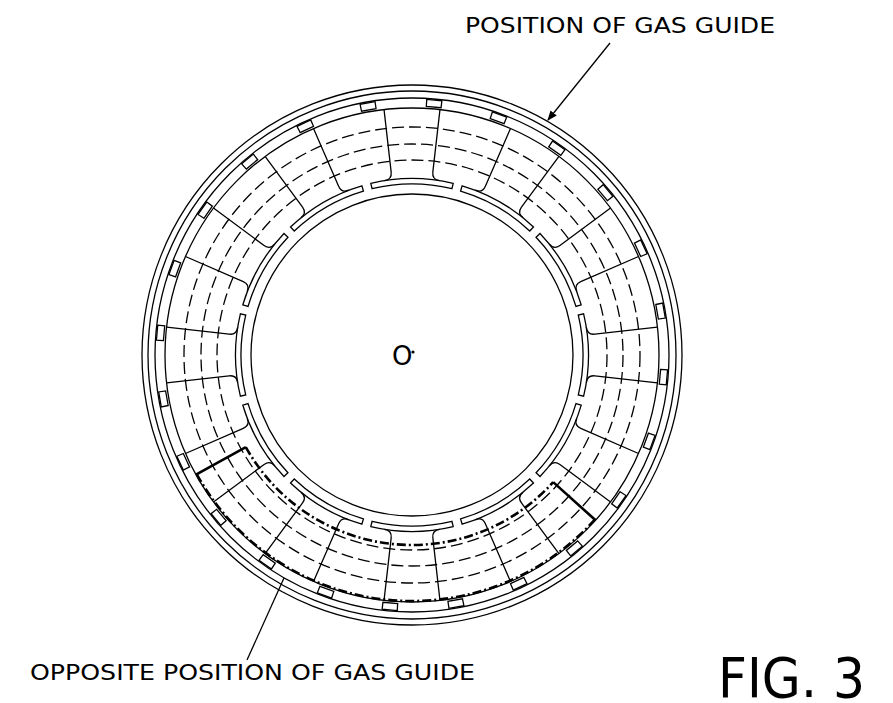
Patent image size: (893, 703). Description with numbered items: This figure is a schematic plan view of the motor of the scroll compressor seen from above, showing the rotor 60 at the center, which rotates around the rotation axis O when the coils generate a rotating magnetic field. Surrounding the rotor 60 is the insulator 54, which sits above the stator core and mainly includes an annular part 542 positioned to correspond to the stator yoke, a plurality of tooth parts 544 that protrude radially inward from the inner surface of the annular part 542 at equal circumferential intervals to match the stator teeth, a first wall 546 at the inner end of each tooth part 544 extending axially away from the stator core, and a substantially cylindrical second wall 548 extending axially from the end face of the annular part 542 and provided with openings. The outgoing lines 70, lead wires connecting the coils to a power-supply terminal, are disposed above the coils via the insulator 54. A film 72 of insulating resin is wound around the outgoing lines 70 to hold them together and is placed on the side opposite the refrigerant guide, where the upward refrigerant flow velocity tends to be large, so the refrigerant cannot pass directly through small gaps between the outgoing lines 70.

The insulator 54 is at (627, 169).
The annular part 542 is at (456, 355).
The tooth part 544 is at (397, 167).
The first wall 546 is at (500, 200).
The second wall 548 is at (410, 85).
The rotor 60 is at (543, 328).
The outgoing line 70 is at (648, 367).
The film 72 is at (597, 521).